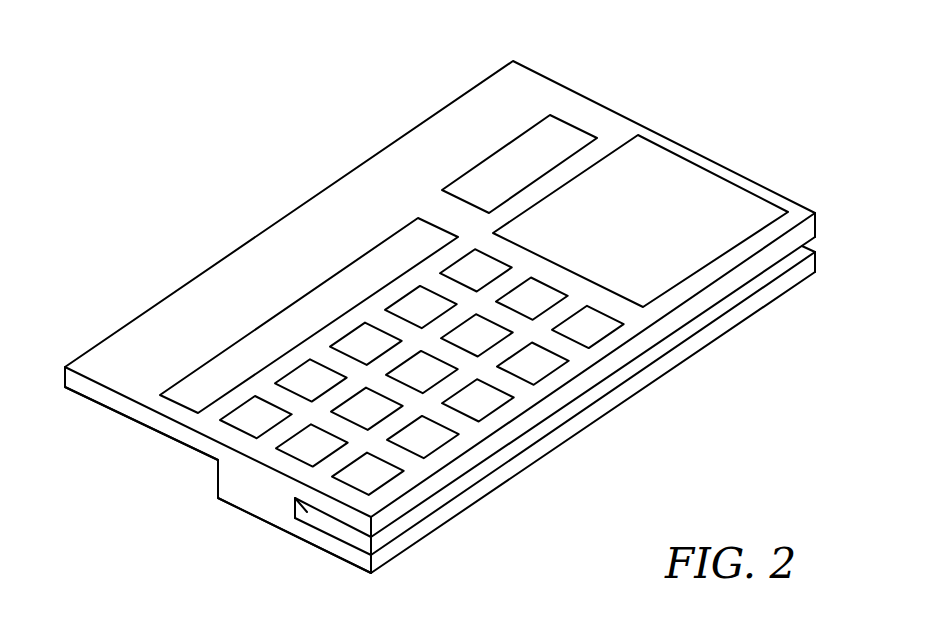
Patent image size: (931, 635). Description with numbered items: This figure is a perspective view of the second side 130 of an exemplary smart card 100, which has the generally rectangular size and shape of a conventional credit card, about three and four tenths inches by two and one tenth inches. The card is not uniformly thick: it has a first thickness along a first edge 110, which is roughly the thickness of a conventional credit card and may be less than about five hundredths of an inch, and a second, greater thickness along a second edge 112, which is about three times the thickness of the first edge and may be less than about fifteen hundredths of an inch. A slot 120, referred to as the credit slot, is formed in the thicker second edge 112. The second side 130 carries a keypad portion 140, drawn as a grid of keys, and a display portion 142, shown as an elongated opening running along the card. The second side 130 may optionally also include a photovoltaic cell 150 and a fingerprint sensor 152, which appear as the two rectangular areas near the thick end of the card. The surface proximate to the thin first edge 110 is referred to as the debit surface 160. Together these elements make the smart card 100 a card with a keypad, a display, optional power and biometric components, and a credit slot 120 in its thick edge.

The smart card 100 is at (449, 294).
The first edge 110 is at (414, 294).
The second edge 112 is at (780, 283).
The slot 120 is at (552, 409).
The second side 130 is at (527, 95).
The keypad portion 140 is at (270, 442).
The display portion 142 is at (192, 394).
The photovoltaic cell 150 is at (558, 137).
The fingerprint sensor 152 is at (705, 193).
The debit surface 160 is at (103, 408).